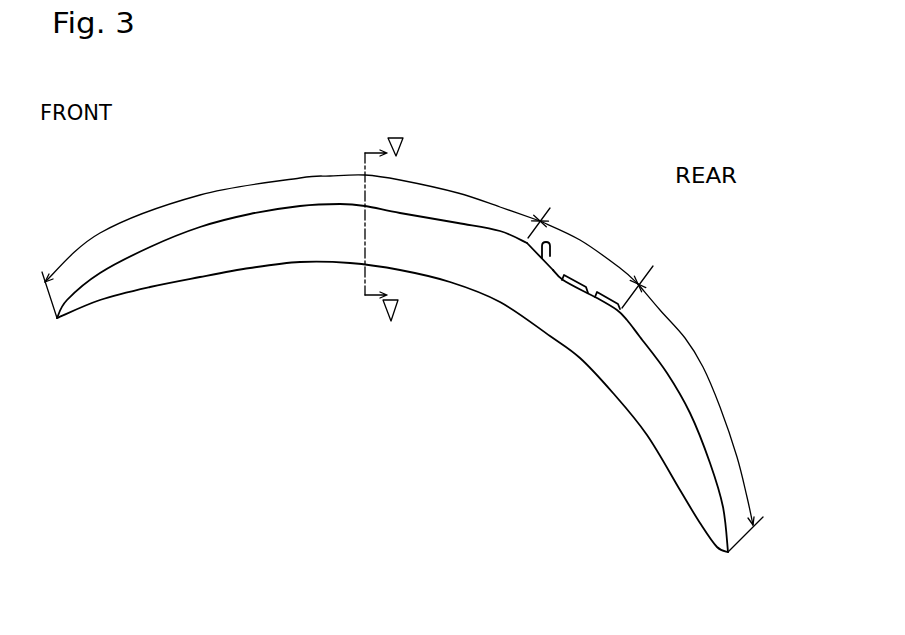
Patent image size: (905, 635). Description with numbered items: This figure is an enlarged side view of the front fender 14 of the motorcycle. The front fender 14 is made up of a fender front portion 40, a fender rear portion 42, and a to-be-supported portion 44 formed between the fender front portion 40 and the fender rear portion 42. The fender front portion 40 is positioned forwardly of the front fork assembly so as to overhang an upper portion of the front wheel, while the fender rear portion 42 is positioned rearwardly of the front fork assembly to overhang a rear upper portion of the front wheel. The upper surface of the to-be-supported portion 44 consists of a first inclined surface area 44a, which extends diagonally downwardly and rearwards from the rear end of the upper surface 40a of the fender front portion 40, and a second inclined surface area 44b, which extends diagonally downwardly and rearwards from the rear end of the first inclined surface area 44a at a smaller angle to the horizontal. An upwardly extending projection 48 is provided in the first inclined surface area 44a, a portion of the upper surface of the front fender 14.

The front fender 14 is at (461, 174).
The fender front portion 40 is at (257, 184).
The upper surface of the fender front portion 40a is at (492, 228).
The fender rear portion 42 is at (687, 339).
The to-be-supported portion 44 is at (622, 268).
The first inclined surface area 44a is at (564, 277).
The second inclined surface area 44b is at (594, 293).
The projection 48 is at (552, 262).